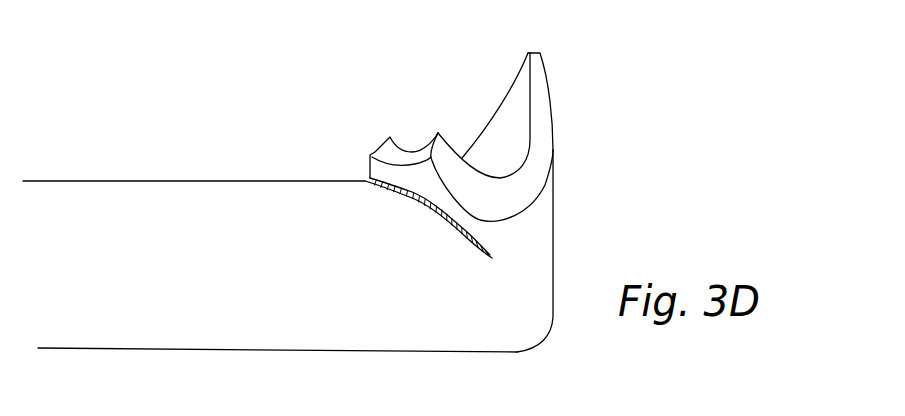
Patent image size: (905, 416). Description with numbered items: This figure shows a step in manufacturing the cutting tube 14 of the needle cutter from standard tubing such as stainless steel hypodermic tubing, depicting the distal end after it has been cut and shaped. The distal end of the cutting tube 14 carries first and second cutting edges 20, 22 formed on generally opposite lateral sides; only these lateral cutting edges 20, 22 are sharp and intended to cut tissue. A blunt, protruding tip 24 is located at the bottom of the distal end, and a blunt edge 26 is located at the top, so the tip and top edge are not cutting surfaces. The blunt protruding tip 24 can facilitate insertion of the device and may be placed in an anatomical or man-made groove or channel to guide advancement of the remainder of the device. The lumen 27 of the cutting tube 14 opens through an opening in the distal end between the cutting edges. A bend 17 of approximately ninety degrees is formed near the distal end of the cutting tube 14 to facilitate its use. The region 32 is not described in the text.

The cutting tube 14 is at (88, 212).
The bend 17 is at (562, 317).
The first cutting edge 20 is at (453, 140).
The second cutting edge 22 is at (505, 197).
The blunt protruding tip 24 is at (532, 52).
The blunt edge 26 is at (375, 152).
The lumen 27 is at (503, 160).
The hardened edge strip 32 is at (370, 180).